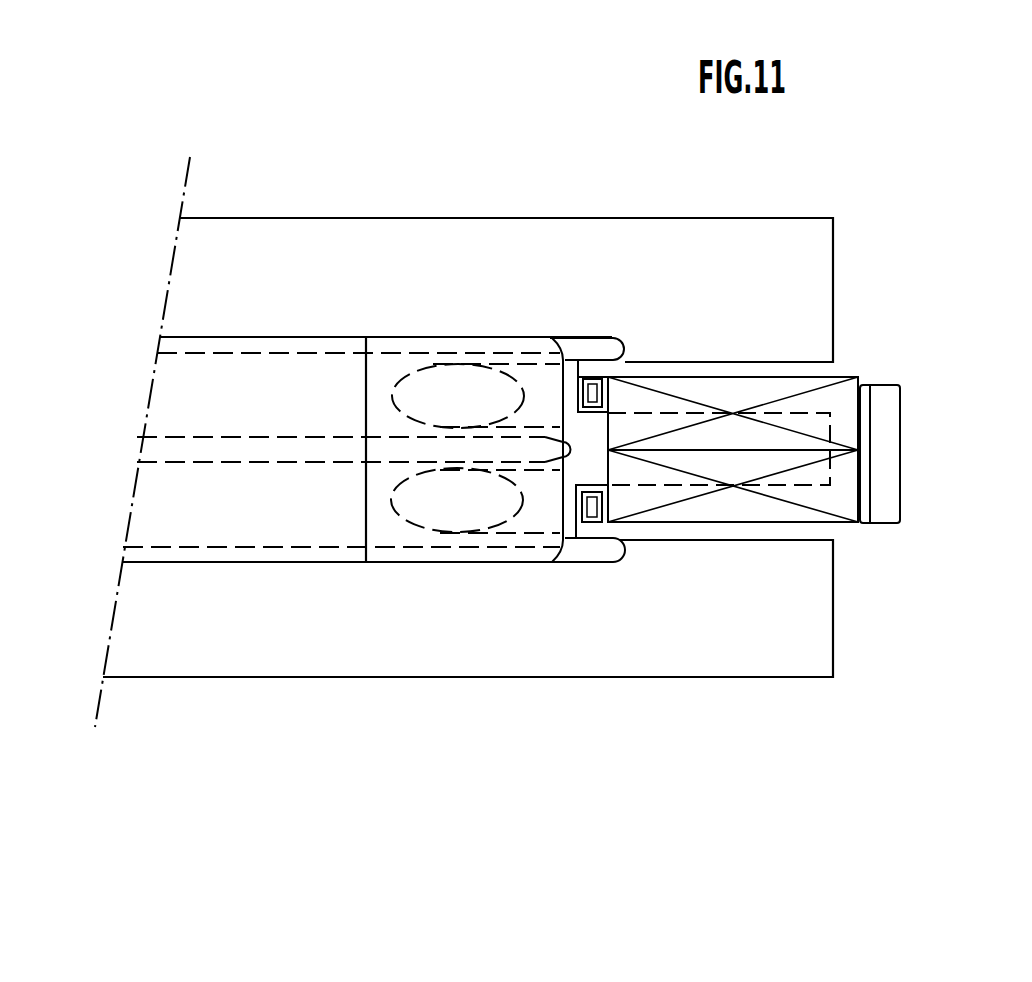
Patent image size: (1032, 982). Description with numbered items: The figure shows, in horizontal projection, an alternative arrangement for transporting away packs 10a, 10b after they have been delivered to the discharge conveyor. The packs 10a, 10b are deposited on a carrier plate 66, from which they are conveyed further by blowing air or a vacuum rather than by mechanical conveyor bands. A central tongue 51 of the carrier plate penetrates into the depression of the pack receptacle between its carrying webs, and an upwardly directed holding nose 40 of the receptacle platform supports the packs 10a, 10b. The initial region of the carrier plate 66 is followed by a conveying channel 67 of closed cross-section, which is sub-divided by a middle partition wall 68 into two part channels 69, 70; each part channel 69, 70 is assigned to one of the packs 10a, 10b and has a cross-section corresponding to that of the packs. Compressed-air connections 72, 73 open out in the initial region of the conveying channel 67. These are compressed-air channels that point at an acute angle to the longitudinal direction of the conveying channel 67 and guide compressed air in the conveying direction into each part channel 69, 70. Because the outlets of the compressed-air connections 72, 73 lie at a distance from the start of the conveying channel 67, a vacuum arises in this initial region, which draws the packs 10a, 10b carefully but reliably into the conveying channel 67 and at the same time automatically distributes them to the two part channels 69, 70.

The carrier plate 66 is at (862, 268).
The conveying channel 67 is at (308, 326).
The middle partition wall 68 is at (307, 448).
The part channel 69 is at (338, 353).
The part channel 70 is at (208, 545).
The compressed-air connection 72 is at (498, 375).
The compressed-air connection 73 is at (513, 528).
The central tongue 51 is at (808, 473).
The pack 10a is at (797, 393).
The pack 10b is at (813, 517).
The holding nose 40 is at (887, 445).